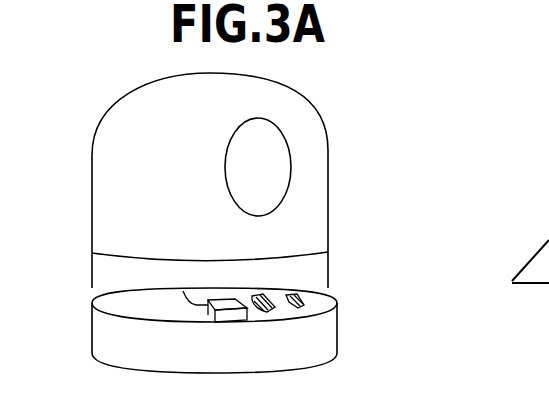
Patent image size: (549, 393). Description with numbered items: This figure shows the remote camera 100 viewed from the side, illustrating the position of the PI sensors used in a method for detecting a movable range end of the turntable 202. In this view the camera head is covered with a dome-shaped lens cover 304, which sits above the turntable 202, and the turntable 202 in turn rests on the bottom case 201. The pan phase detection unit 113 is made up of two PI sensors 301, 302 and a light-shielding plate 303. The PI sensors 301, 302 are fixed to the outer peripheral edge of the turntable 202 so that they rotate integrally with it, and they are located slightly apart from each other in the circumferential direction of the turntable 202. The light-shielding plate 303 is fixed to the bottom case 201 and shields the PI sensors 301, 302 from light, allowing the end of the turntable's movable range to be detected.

The remote camera 100 is at (247, 212).
The dome-shaped lens cover 304 is at (328, 183).
The turntable 202 is at (99, 272).
The bottom case 201 is at (99, 332).
The pan phase detection unit 113 is at (328, 307).
The PI sensor 301 is at (268, 293).
The PI sensor 302 is at (303, 298).
The light-shielding plate 303 is at (232, 316).